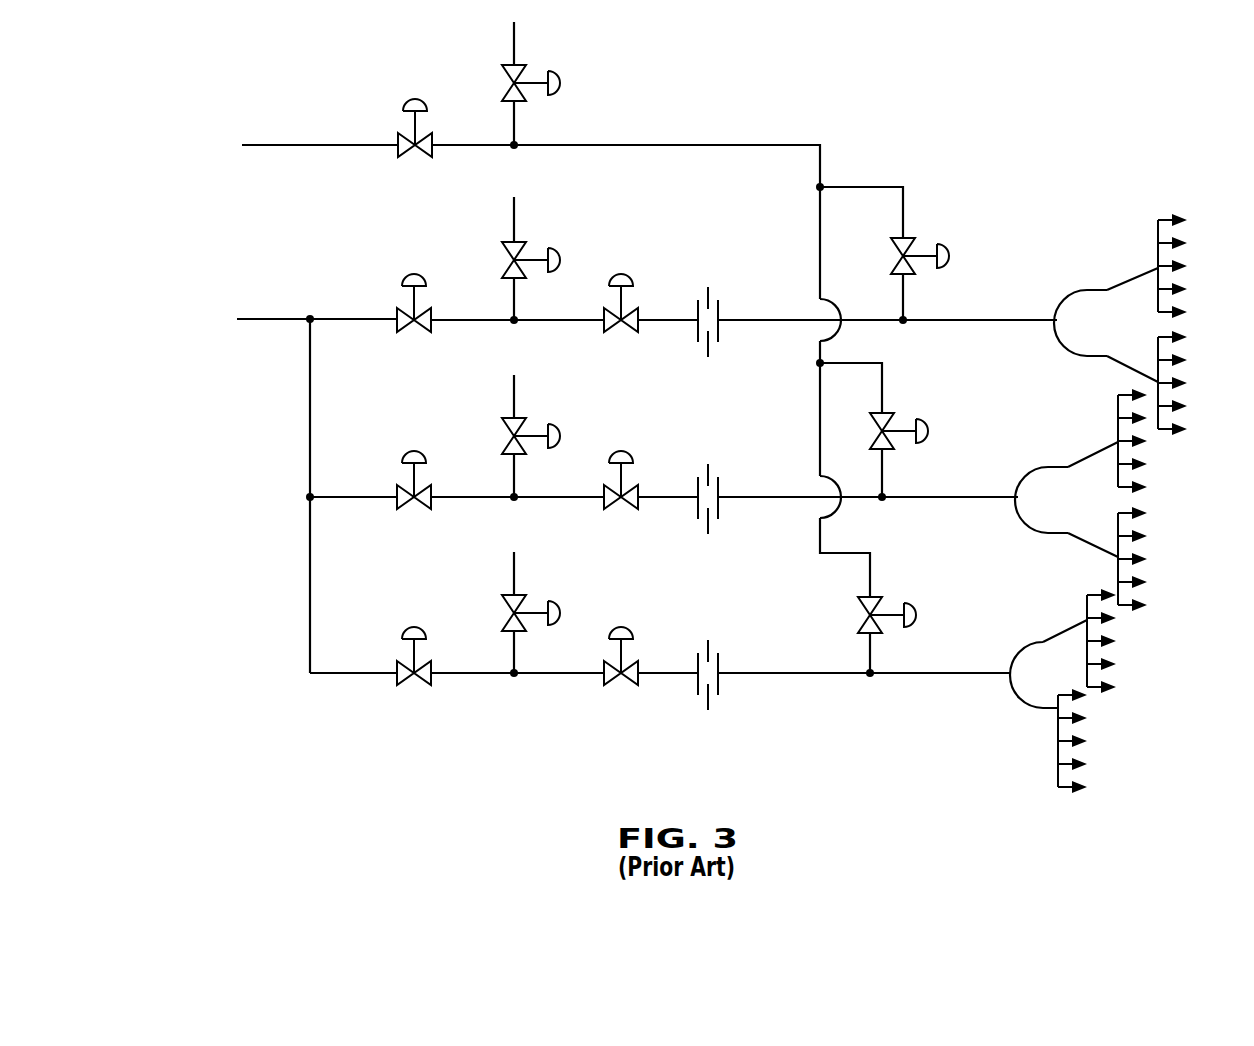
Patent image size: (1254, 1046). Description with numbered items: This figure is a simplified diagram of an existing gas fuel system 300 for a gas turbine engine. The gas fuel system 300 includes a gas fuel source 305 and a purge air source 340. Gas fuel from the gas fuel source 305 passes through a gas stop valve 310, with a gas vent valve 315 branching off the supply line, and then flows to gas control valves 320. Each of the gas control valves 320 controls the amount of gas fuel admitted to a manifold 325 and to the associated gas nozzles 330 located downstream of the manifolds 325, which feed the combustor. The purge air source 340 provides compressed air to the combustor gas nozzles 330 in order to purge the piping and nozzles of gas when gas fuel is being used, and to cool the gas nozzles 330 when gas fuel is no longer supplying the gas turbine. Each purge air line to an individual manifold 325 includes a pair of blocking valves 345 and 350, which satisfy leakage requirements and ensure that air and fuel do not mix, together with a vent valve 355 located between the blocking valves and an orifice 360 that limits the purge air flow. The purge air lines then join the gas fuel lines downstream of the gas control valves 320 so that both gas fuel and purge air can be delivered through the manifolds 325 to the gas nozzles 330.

The gas fuel system 300 is at (498, 785).
The gas fuel source 305 is at (197, 188).
The gas stop valve 310 is at (427, 96).
The gas vent valve 315 is at (561, 82).
The gas control valves 320 is at (946, 247).
The manifolds 325 is at (1058, 310).
The gas nozzles 330 is at (1184, 290).
The purge air source 340 is at (197, 357).
The blocking valve 345 is at (424, 273).
The blocking valve 350 is at (657, 257).
The vent valve 355 is at (569, 231).
The orifice 360 is at (718, 301).